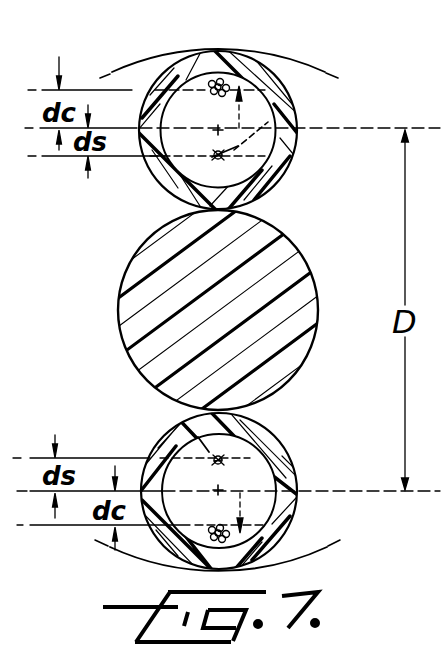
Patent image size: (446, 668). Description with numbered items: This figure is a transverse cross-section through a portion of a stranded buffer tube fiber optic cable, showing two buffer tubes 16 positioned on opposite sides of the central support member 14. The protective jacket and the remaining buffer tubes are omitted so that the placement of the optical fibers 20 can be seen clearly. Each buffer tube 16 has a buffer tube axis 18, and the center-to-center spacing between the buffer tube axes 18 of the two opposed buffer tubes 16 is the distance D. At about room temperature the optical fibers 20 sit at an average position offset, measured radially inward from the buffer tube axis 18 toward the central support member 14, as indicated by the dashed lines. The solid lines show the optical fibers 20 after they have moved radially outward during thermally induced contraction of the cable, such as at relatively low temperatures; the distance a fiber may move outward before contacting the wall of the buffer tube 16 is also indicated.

The central support member 14 is at (287, 263).
The buffer tube 16 is at (300, 137).
The buffer tube axis 18 is at (218, 130).
The optical fiber 20 is at (218, 77).